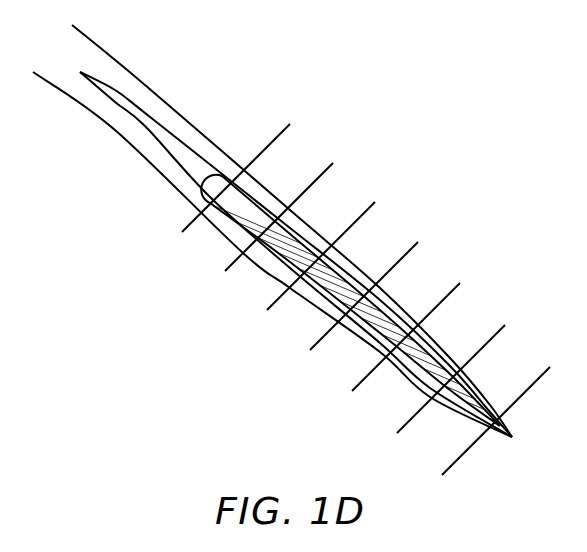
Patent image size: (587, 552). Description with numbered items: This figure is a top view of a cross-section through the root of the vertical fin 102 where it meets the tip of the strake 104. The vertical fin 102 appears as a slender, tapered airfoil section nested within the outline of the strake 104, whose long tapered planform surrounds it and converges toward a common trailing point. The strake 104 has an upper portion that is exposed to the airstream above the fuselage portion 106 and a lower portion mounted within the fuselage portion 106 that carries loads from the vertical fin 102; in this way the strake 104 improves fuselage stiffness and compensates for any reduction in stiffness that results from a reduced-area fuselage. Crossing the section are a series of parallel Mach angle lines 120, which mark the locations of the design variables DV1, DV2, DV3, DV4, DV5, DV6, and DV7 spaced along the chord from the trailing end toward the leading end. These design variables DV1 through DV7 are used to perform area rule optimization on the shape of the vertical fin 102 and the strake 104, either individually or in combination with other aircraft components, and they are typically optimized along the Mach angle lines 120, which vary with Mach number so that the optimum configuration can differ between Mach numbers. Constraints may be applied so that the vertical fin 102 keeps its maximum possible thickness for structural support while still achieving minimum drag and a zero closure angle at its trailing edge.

The vertical fin 102 is at (382, 310).
The strake 104 is at (150, 130).
The fuselage portion 106 is at (130, 74).
The Mach angle lines 120 is at (351, 314).
The design variable DV1 is at (476, 435).
The design variable DV2 is at (432, 393).
The design variable DV3 is at (387, 352).
The design variable DV4 is at (344, 310).
The design variable DV5 is at (303, 271).
The design variable DV6 is at (262, 232).
The design variable DV7 is at (221, 194).